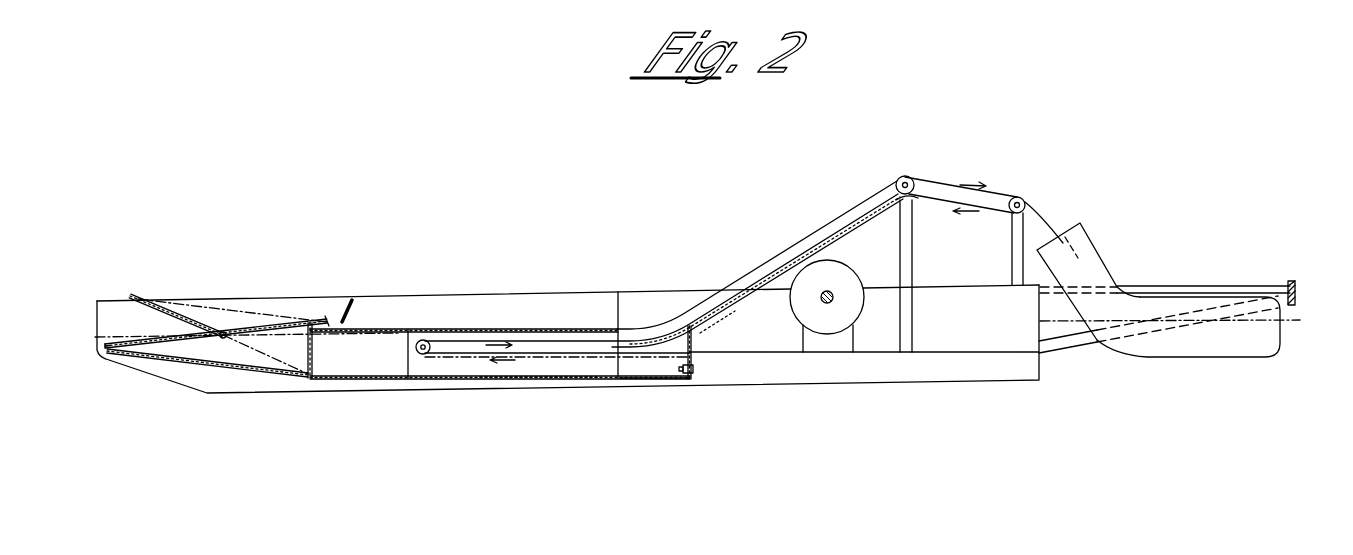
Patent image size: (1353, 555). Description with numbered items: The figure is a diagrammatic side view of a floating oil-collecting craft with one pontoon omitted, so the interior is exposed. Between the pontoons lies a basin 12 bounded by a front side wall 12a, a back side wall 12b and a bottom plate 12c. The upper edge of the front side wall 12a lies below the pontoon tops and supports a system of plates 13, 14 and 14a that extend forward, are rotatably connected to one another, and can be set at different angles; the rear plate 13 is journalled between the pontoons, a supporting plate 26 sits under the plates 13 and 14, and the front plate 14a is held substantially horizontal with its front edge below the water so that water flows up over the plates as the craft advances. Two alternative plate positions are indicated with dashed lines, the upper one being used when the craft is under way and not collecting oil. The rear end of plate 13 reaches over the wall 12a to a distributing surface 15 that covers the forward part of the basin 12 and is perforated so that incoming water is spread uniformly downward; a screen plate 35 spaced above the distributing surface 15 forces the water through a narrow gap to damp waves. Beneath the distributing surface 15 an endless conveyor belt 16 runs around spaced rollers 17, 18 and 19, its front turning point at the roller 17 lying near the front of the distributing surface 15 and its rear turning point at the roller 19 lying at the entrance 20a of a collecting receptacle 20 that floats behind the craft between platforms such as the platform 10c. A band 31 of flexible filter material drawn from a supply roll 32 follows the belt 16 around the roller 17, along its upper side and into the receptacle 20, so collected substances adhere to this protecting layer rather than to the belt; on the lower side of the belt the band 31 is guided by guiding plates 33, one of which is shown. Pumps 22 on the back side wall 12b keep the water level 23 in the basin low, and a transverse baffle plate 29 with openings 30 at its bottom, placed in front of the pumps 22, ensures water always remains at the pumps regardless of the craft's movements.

The platform 10c is at (1178, 285).
The basin 12 is at (476, 370).
The front side wall 12a is at (318, 356).
The back side wall 12b is at (687, 358).
The bottom plate 12c is at (538, 380).
The rear plate 13 is at (257, 330).
The plate 14 is at (173, 338).
The front plate 14a is at (112, 338).
The distributing surface 15 is at (390, 328).
The endless conveyor belt 16 is at (743, 277).
The roller 17 is at (427, 338).
The roller 18 is at (902, 176).
The roller 19 is at (1020, 197).
The collecting receptacle 20 is at (1190, 358).
The entrance 20a is at (1068, 227).
The pumps 22 is at (694, 375).
The water level 23 is at (440, 357).
The supporting plate 26 is at (207, 362).
The transverse baffle plate 29 is at (613, 358).
The openings 30 is at (623, 368).
The band 31 is at (805, 252).
The supply roll 32 is at (843, 265).
The guiding plates 33 is at (736, 302).
The screen plate 35 is at (340, 308).